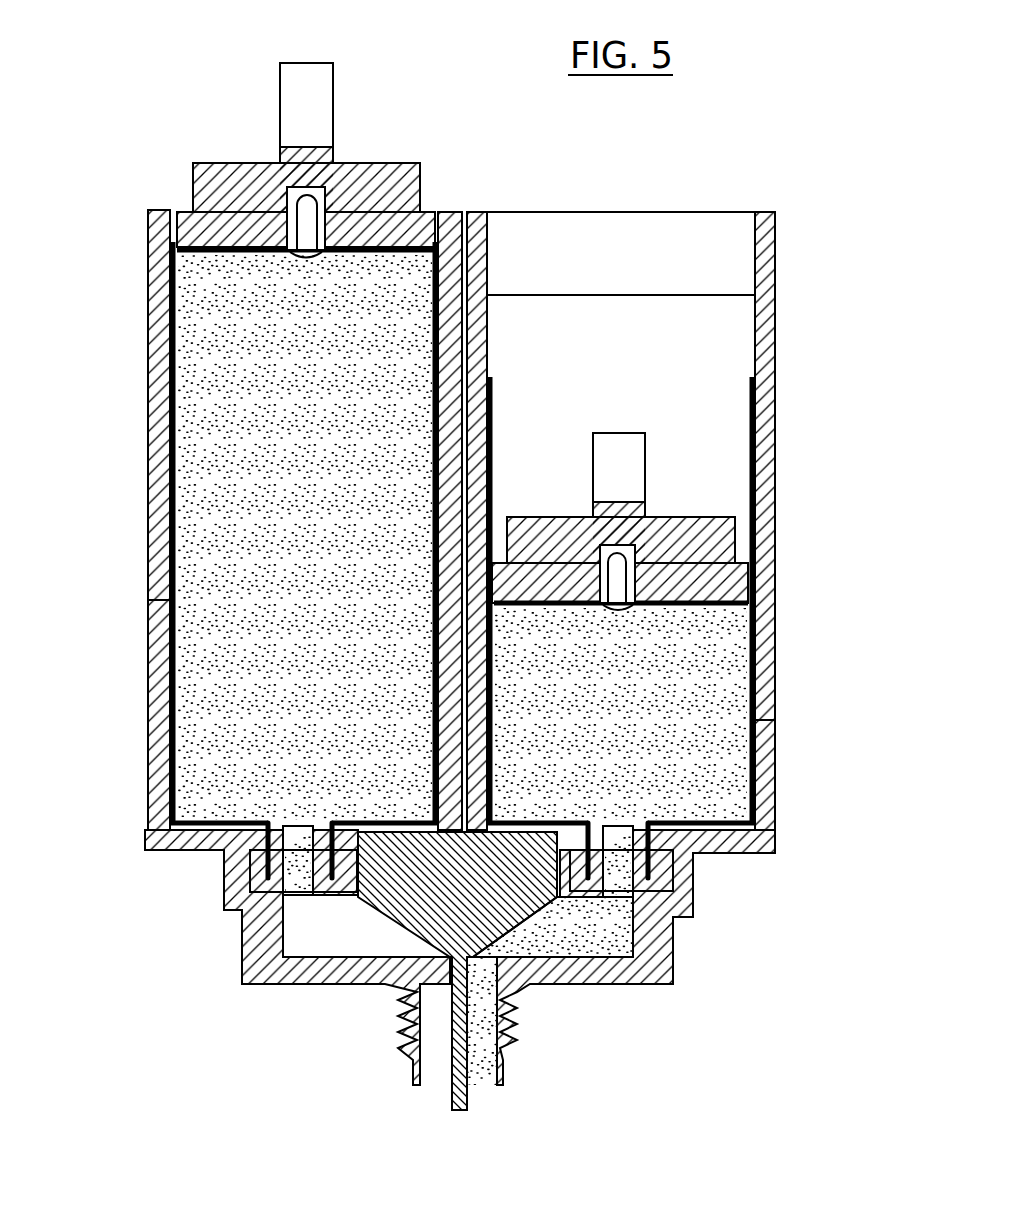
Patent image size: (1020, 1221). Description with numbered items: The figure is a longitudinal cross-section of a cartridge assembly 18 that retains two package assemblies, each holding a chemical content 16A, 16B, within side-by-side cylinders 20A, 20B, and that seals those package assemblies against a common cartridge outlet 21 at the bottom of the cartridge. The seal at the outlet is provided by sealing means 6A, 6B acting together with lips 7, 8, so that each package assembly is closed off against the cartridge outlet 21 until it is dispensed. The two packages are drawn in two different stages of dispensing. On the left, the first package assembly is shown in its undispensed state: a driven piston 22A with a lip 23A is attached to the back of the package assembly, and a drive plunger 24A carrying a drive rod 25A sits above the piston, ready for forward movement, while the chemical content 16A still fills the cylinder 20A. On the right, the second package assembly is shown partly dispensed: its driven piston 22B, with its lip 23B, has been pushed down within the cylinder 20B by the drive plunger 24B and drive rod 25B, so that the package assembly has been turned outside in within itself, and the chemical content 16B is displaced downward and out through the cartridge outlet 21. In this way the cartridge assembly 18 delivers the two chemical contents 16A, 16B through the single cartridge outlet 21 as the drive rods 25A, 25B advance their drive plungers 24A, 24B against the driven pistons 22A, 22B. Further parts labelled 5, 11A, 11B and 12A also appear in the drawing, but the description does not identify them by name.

The base housing 5 is at (150, 817).
The sealing means 6A is at (243, 878).
The sealing means 6B is at (693, 905).
The lip 7 is at (240, 863).
The lip 8 is at (240, 887).
The first cylinder wall 11A is at (158, 518).
The second cylinder wall 11B is at (760, 690).
The first chamber liner 12A is at (170, 373).
The chemical content 16A is at (330, 448).
The chemical content 16B is at (648, 731).
The cartridge assembly 18 is at (288, 1013).
The cylinder 20A is at (158, 687).
The cylinder 20B is at (773, 757).
The cartridge outlet 21 is at (425, 897).
The driven piston 22A is at (197, 225).
The driven piston 22B is at (747, 573).
The lip 23A is at (172, 258).
The lip 23B is at (748, 607).
The drive plunger 24A is at (392, 183).
The drive plunger 24B is at (688, 537).
The drive rod 25A is at (298, 83).
The drive rod 25B is at (608, 457).